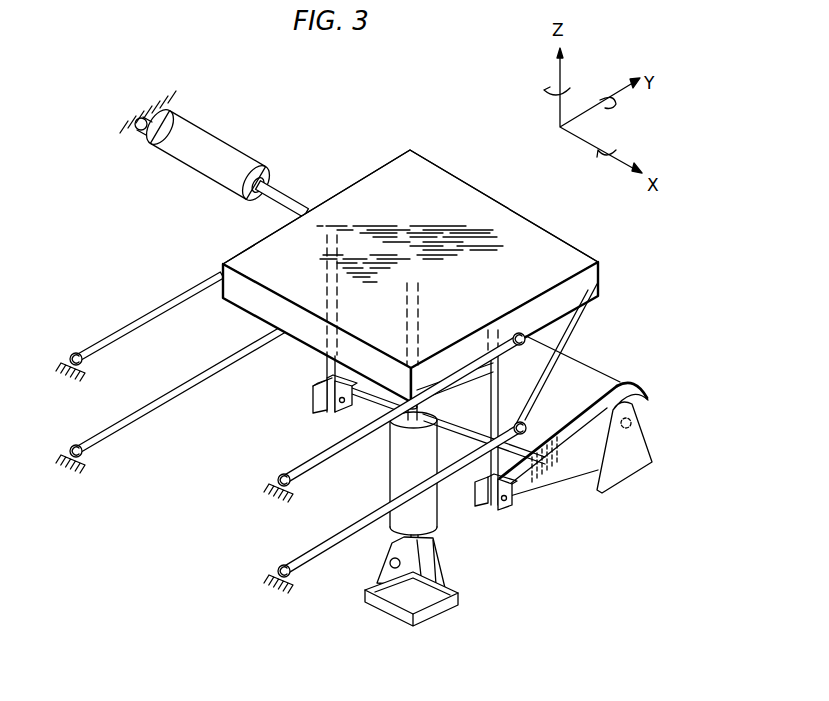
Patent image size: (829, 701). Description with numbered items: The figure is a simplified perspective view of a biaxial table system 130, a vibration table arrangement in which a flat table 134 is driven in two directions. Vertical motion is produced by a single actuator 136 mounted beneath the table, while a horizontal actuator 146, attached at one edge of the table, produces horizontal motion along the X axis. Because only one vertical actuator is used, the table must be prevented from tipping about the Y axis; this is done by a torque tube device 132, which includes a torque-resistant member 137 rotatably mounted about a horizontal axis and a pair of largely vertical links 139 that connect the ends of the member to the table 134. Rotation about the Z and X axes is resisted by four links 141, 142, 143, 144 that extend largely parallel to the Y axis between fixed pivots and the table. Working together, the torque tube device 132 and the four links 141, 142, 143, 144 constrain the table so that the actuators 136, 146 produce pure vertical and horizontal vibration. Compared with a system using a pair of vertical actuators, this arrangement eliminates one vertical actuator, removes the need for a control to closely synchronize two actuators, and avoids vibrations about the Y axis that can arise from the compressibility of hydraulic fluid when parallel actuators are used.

The biaxial table system 130 is at (630, 365).
The torque tube device 132 is at (647, 400).
The table 134 is at (373, 172).
The actuator 136 is at (434, 527).
The torque-resistant member 137 is at (577, 363).
The vertical links 139 is at (325, 380).
The link 141 is at (311, 460).
The link 142 is at (329, 541).
The link 143 is at (118, 329).
The link 144 is at (170, 392).
The horizontal actuator 146 is at (190, 172).